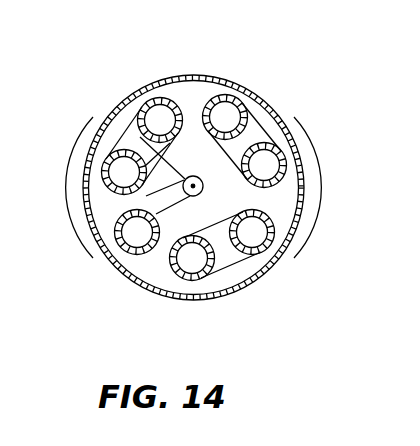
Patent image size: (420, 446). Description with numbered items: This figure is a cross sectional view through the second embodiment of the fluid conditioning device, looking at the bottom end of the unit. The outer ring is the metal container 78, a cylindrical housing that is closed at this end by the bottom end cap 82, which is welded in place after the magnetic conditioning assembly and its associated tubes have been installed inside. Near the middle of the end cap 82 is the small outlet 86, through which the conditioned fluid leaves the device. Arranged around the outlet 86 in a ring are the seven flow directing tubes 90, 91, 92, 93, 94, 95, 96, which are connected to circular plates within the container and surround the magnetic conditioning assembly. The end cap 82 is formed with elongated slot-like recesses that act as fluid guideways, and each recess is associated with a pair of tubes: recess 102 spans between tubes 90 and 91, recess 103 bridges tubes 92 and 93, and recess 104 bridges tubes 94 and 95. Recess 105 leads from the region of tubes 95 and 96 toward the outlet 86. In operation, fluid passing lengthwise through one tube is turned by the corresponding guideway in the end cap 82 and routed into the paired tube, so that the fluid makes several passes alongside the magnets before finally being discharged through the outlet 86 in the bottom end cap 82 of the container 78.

The metal container 78 is at (231, 82).
The bottom end cap 82 is at (147, 269).
The outlet 86 is at (194, 184).
The flow directing tube 90 is at (201, 272).
The flow directing tube 91 is at (274, 233).
The flow directing tube 92 is at (285, 158).
The flow directing tube 93 is at (244, 108).
The flow directing tube 94 is at (156, 99).
The flow directing tube 95 is at (103, 158).
The flow directing tube 96 is at (116, 240).
The slot-like recess 102 is at (231, 254).
The slot-like recess 103 is at (256, 134).
The slot-like recess 104 is at (134, 136).
The slot-like recess 105 is at (156, 203).